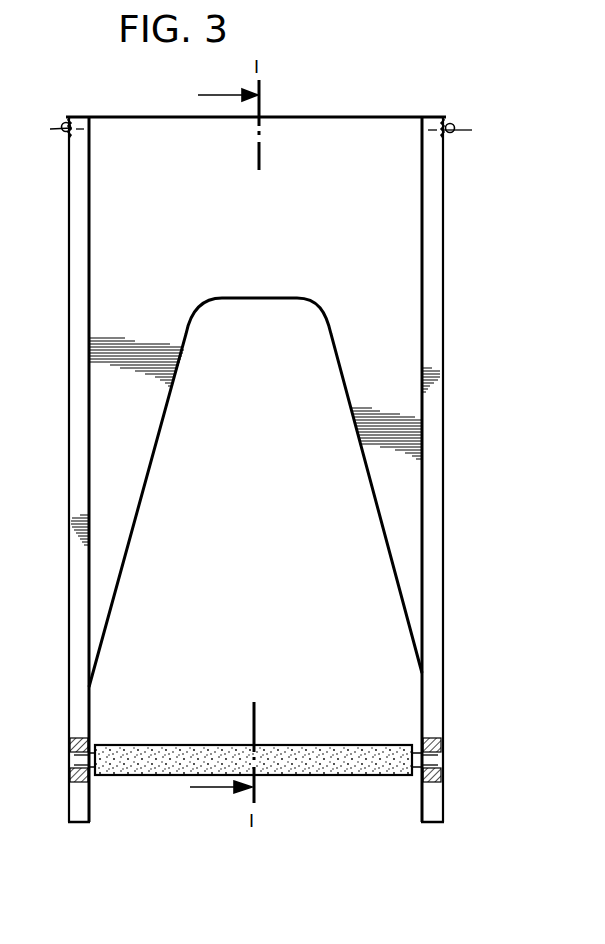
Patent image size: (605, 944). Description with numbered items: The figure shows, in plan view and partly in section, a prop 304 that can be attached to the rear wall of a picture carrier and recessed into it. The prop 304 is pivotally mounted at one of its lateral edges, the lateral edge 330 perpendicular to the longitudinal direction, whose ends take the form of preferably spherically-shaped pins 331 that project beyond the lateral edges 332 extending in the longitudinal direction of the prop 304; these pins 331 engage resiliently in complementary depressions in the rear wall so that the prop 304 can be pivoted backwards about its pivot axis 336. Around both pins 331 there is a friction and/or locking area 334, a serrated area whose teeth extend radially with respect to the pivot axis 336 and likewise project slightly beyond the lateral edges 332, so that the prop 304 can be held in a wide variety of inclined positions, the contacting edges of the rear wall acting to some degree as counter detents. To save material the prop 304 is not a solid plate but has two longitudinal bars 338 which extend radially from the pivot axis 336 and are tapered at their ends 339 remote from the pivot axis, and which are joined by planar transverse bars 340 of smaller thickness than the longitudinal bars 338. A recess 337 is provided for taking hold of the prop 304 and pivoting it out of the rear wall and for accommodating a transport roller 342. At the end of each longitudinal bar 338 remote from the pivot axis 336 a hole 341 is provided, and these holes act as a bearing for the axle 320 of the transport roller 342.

The prop 304 is at (132, 840).
The axle 320 is at (78, 757).
The lateral edge 330 is at (376, 115).
The pins 331 is at (63, 124).
The lateral edges 332 is at (66, 254).
The friction and/or locking area 334 is at (67, 132).
The pivot axis 336 is at (80, 131).
The recess 337 is at (271, 428).
The longitudinal bars 338 is at (80, 324).
The ends 339 is at (68, 797).
The transverse bars 340 is at (281, 239).
The hole 341 is at (93, 758).
The transport roller 342 is at (324, 766).